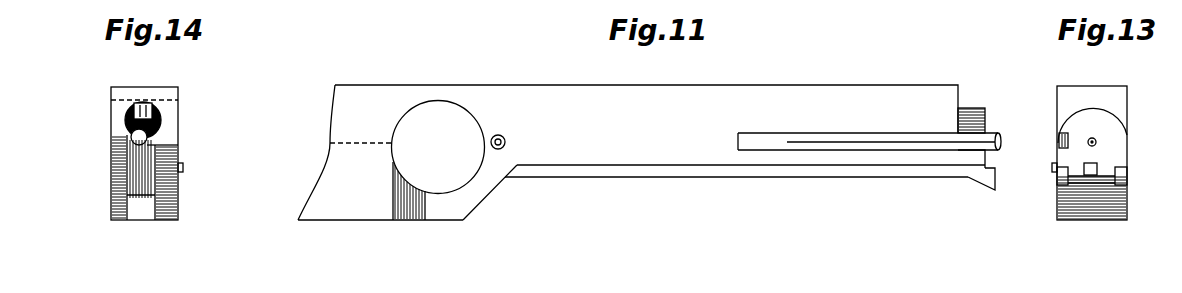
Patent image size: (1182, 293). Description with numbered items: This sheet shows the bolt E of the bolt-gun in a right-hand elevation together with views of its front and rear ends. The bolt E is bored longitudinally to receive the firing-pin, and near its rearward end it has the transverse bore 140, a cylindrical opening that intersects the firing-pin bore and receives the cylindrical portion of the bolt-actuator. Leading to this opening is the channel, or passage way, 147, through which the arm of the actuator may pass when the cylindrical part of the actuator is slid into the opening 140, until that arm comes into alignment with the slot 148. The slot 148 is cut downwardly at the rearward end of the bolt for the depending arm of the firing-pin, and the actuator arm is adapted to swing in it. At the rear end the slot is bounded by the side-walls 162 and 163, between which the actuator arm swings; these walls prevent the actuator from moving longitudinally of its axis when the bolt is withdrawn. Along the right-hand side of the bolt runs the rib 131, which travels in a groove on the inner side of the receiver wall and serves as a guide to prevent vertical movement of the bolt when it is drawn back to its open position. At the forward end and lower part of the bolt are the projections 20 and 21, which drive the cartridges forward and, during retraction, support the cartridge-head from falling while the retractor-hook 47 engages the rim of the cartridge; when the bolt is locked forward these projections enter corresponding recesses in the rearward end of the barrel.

In FIG. 14, the bolt E is at (172, 112).
In FIG. 11, the bolt E is at (518, 105).
In FIG. 13, the bolt E is at (1134, 101).
In FIG. 11, the transverse bore 140 is at (432, 115).
In FIG. 11, the channel 147 is at (415, 208).
In FIG. 14, the slot 148 is at (138, 203).
In FIG. 14, the side-wall 162 is at (170, 183).
In FIG. 11, the side-wall 162 is at (345, 200).
In FIG. 14, the side-wall 163 is at (112, 163).
In FIG. 14, the rib 131 is at (184, 168).
In FIG. 11, the rib 131 is at (742, 168).
In FIG. 13, the rib 131 is at (1053, 168).
In FIG. 11, the retractor-hook 47 is at (999, 141).
In FIG. 13, the retractor-hook 47 is at (1060, 140).
In FIG. 11, the projection 20 is at (990, 180).
In FIG. 13, the projection 20 is at (1058, 180).
In FIG. 13, the projection 21 is at (1128, 176).